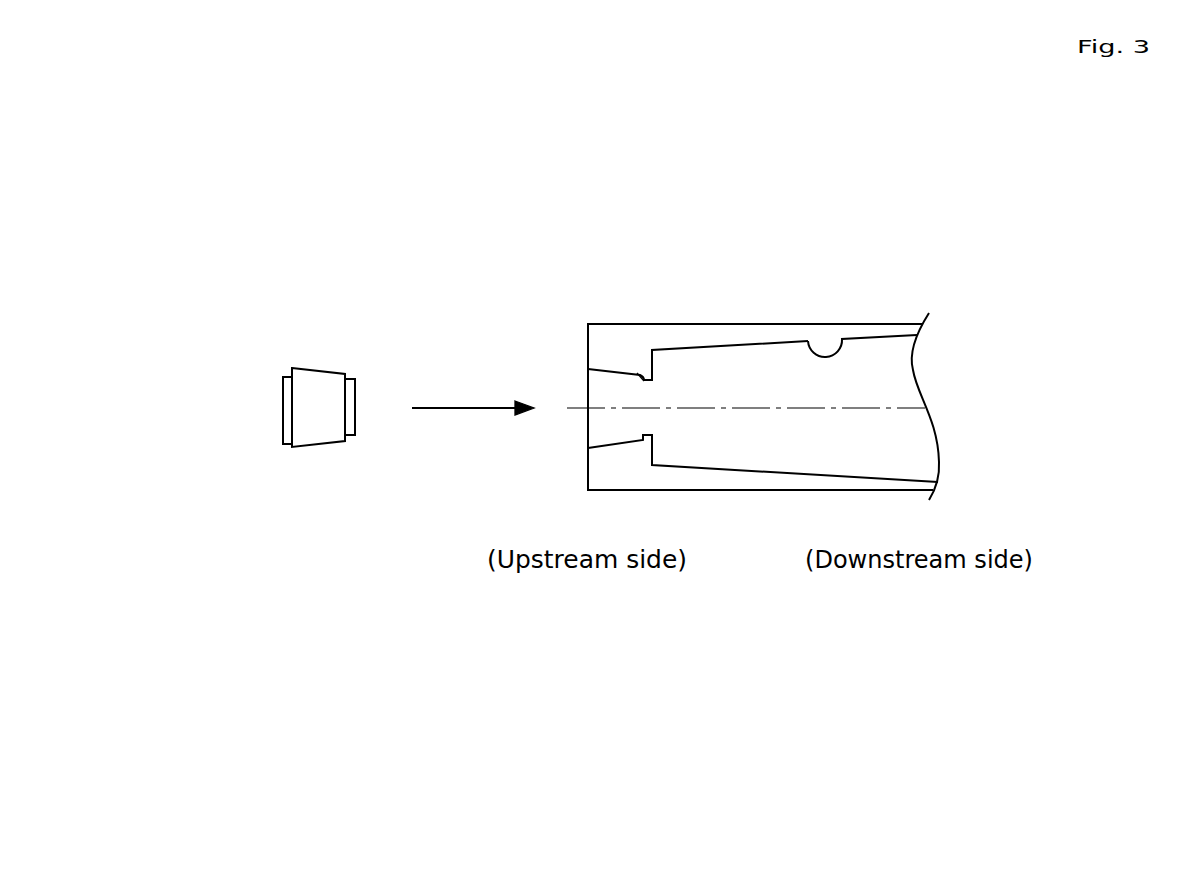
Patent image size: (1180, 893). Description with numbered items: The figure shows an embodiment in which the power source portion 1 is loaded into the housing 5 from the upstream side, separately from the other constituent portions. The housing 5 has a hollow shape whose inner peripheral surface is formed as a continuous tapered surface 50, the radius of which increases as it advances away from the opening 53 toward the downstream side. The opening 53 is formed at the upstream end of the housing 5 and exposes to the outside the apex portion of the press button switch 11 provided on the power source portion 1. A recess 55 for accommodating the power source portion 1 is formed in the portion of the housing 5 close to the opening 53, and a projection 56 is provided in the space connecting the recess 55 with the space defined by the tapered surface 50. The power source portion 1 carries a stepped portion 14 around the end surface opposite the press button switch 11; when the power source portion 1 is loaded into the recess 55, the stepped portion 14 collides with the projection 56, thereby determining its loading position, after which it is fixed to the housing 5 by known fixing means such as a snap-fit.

The power source portion 1 is at (325, 368).
The press button switch 11 is at (283, 411).
The stepped portion 14 is at (346, 441).
The housing 5 is at (738, 334).
The tapered surface 50 is at (840, 347).
The opening 53 is at (588, 423).
The recess 55 is at (598, 392).
The projection 56 is at (637, 373).